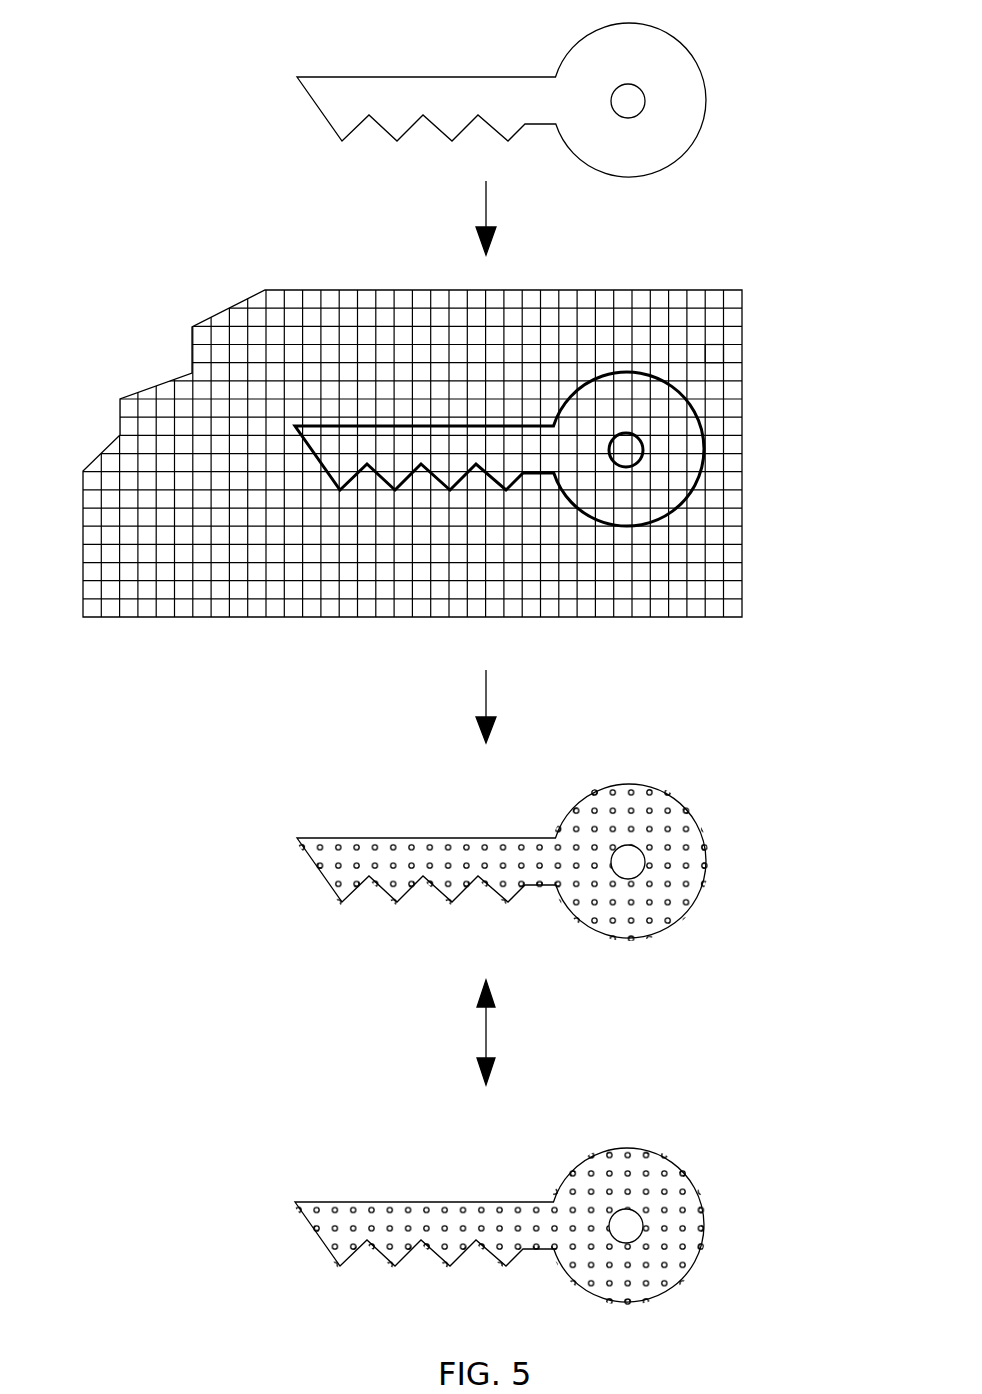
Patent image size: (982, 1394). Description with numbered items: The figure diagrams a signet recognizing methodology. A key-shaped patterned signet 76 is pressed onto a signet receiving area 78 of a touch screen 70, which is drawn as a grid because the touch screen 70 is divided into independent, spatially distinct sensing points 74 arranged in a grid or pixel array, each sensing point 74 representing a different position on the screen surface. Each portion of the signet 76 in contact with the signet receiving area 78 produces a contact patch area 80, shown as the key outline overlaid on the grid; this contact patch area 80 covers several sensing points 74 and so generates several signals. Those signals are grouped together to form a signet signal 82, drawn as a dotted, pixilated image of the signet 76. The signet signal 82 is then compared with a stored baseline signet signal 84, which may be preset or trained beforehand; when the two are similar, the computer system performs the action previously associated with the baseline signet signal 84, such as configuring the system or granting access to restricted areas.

The touch screen 70 is at (247, 293).
The sensing point 74 is at (707, 343).
The signet 76 is at (708, 100).
The signet receiving area 78 is at (605, 300).
The contact patch area 80 is at (707, 445).
The signet signal 82 is at (707, 844).
The baseline signet signal 84 is at (703, 1208).